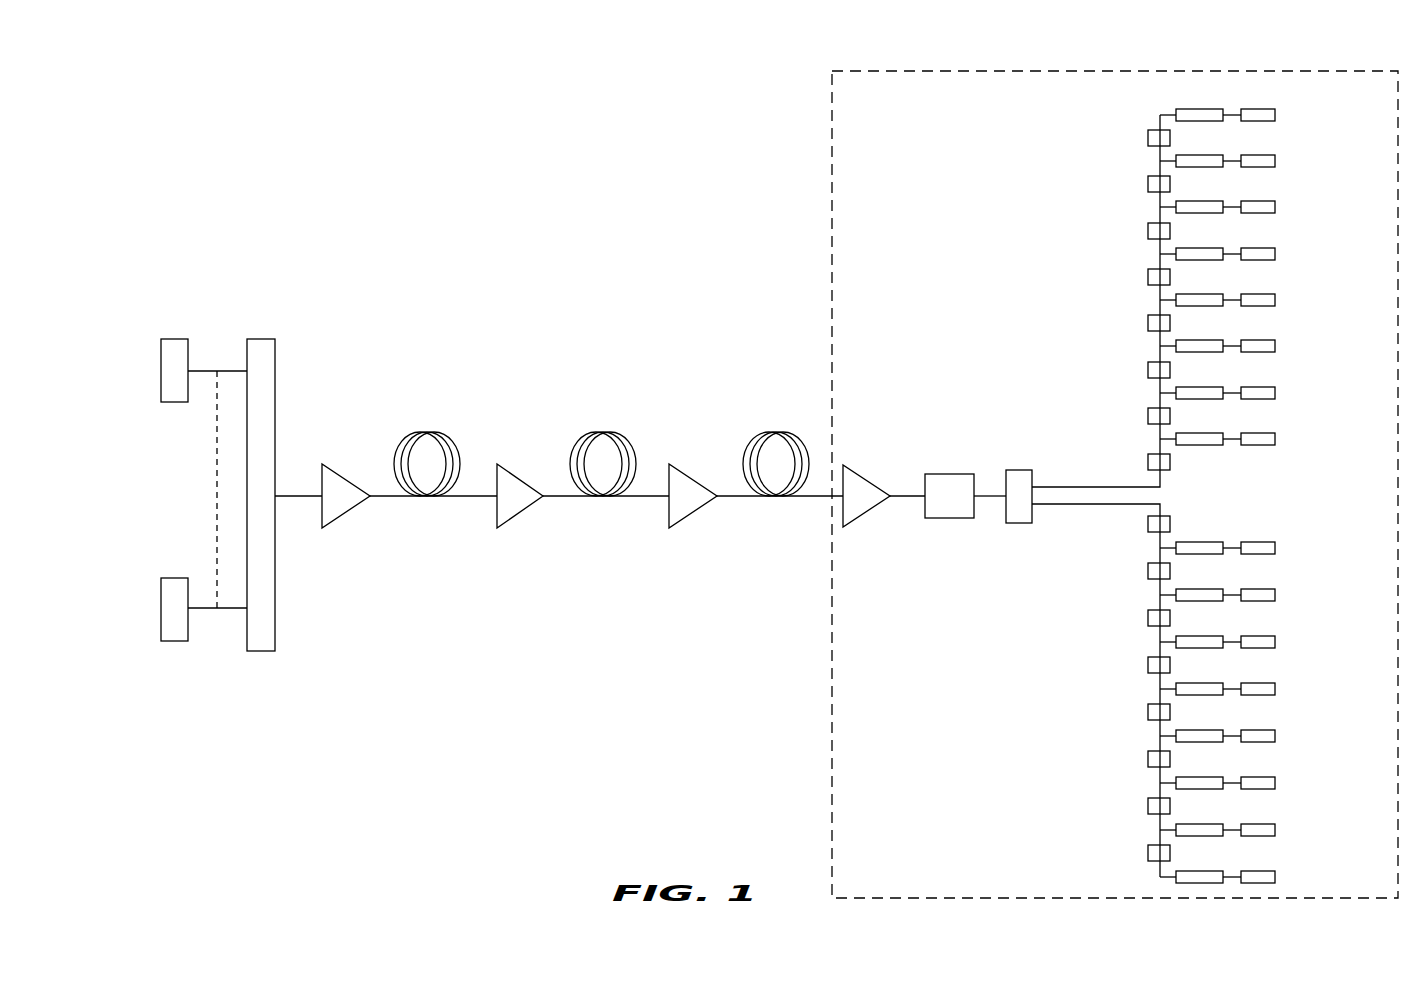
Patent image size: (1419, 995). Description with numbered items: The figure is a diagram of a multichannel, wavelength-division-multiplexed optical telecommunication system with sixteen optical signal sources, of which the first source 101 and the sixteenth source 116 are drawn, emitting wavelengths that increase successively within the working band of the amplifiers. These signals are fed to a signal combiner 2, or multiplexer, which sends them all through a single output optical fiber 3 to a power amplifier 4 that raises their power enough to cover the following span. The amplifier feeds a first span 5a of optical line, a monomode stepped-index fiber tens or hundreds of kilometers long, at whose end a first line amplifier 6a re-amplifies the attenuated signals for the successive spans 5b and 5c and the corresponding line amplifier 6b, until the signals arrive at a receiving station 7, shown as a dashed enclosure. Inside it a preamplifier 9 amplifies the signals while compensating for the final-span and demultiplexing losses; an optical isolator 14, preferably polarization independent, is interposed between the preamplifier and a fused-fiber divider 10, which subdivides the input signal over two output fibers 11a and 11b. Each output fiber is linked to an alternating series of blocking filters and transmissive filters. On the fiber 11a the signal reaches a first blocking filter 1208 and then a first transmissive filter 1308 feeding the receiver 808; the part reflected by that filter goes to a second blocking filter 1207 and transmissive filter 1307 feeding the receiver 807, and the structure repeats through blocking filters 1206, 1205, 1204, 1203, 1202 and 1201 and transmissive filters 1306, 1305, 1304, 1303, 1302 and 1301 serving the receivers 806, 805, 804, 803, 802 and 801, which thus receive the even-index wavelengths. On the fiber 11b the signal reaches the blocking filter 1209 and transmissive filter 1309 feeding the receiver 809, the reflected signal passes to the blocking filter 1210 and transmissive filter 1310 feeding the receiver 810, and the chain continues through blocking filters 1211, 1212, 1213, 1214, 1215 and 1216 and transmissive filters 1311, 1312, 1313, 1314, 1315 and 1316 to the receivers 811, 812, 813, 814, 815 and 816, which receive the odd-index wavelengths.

The optical signal source 101 is at (174, 339).
The optical signal source 116 is at (174, 641).
The signal combiner 2 is at (268, 339).
The output optical fiber 3 is at (288, 494).
The power amplifier 4 is at (353, 483).
The first span of optical line 5a is at (427, 432).
The span of optical line 5b is at (603, 432).
The span of optical line 5c is at (776, 432).
The first line amplifier 6a is at (521, 484).
The line amplifier 6b is at (694, 484).
The receiving station 7 is at (832, 213).
The preamplifier 9 is at (867, 482).
The optical isolator 14 is at (946, 474).
The fused-fiber divider 10 is at (1011, 470).
The output fiber 11a is at (1058, 486).
The output fiber 11b is at (1058, 506).
The blocking filter 1201 is at (1148, 139).
The blocking filter 1202 is at (1148, 185).
The blocking filter 1203 is at (1148, 232).
The blocking filter 1204 is at (1148, 278).
The blocking filter 1205 is at (1148, 324).
The blocking filter 1206 is at (1148, 371).
The second blocking filter 1207 is at (1148, 417).
The first blocking filter 1208 is at (1148, 463).
The blocking filter 1209 is at (1148, 523).
The blocking filter 1210 is at (1148, 570).
The blocking filter 1211 is at (1148, 617).
The blocking filter 1212 is at (1148, 664).
The blocking filter 1213 is at (1148, 711).
The blocking filter 1214 is at (1148, 758).
The blocking filter 1215 is at (1148, 805).
The blocking filter 1216 is at (1148, 852).
The transmissive filter 1301 is at (1177, 109).
The transmissive filter 1302 is at (1177, 155).
The transmissive filter 1303 is at (1177, 201).
The transmissive filter 1304 is at (1177, 248).
The transmissive filter 1305 is at (1177, 294).
The transmissive filter 1306 is at (1177, 340).
The transmissive filter 1307 is at (1177, 387).
The first transmissive filter 1308 is at (1177, 433).
The transmissive filter 1309 is at (1177, 542).
The transmissive filter 1310 is at (1177, 589).
The transmissive filter 1311 is at (1177, 636).
The transmissive filter 1312 is at (1177, 683).
The transmissive filter 1313 is at (1177, 730).
The transmissive filter 1314 is at (1177, 777).
The transmissive filter 1315 is at (1177, 824).
The transmissive filter 1316 is at (1177, 871).
The receiver 801 is at (1243, 109).
The receiver 802 is at (1243, 155).
The receiver 803 is at (1243, 201).
The receiver 804 is at (1243, 248).
The receiver 805 is at (1243, 294).
The receiver 806 is at (1243, 340).
The receiver 807 is at (1243, 387).
The receiver 808 is at (1243, 433).
The receiver 809 is at (1243, 542).
The receiver 810 is at (1243, 589).
The receiver 811 is at (1243, 636).
The receiver 812 is at (1243, 683).
The receiver 813 is at (1243, 730).
The receiver 814 is at (1243, 777).
The receiver 815 is at (1243, 824).
The receiver 816 is at (1243, 871).